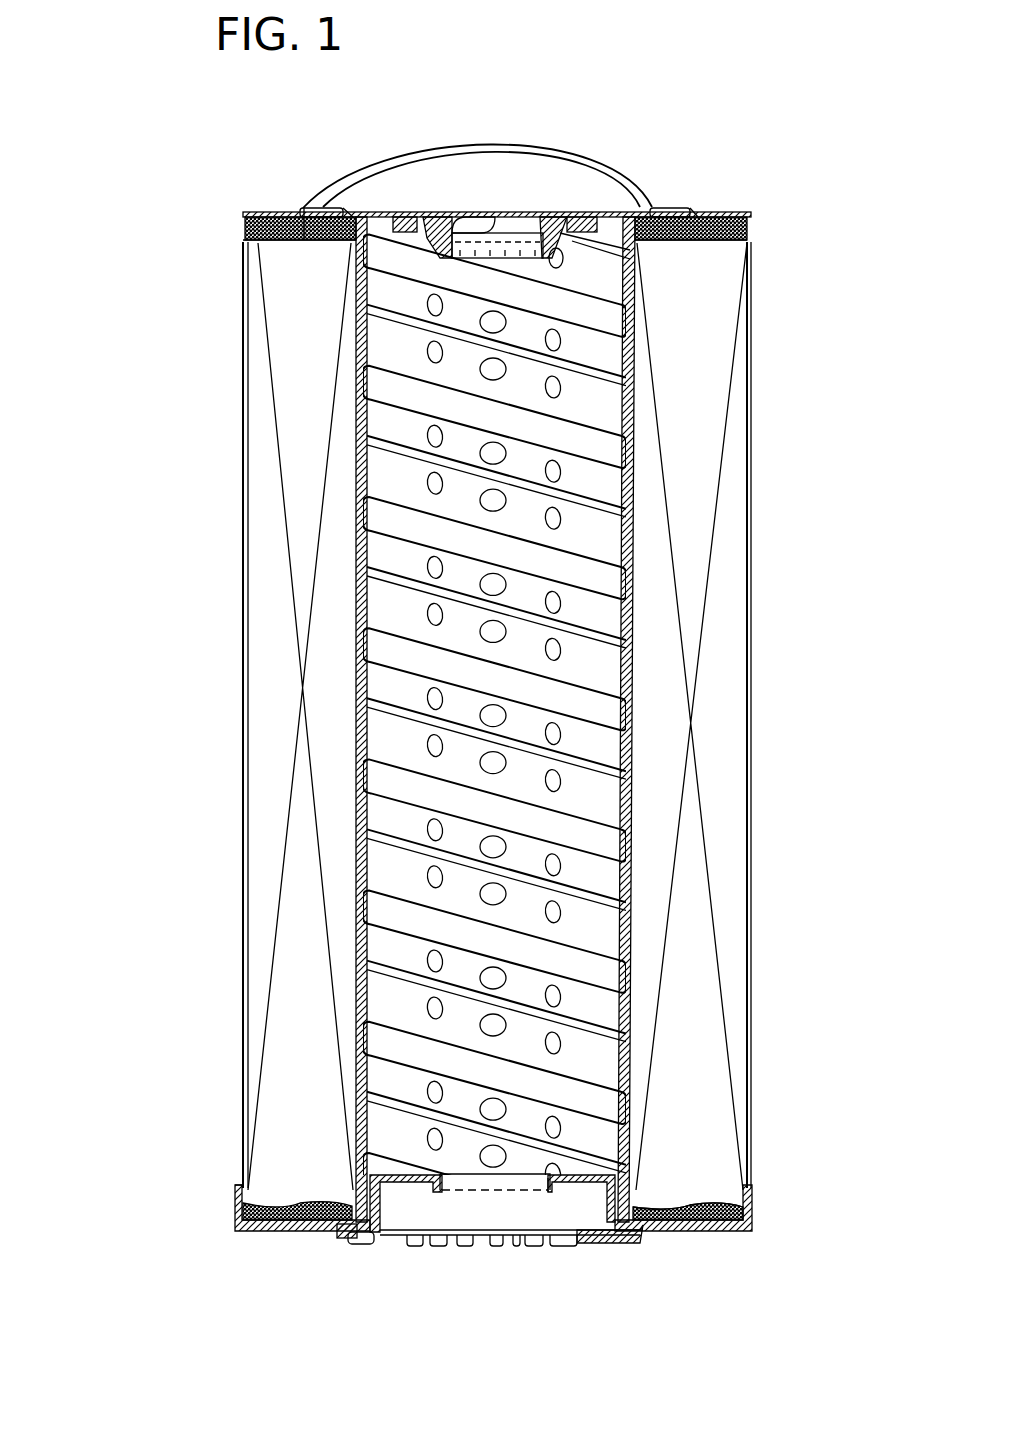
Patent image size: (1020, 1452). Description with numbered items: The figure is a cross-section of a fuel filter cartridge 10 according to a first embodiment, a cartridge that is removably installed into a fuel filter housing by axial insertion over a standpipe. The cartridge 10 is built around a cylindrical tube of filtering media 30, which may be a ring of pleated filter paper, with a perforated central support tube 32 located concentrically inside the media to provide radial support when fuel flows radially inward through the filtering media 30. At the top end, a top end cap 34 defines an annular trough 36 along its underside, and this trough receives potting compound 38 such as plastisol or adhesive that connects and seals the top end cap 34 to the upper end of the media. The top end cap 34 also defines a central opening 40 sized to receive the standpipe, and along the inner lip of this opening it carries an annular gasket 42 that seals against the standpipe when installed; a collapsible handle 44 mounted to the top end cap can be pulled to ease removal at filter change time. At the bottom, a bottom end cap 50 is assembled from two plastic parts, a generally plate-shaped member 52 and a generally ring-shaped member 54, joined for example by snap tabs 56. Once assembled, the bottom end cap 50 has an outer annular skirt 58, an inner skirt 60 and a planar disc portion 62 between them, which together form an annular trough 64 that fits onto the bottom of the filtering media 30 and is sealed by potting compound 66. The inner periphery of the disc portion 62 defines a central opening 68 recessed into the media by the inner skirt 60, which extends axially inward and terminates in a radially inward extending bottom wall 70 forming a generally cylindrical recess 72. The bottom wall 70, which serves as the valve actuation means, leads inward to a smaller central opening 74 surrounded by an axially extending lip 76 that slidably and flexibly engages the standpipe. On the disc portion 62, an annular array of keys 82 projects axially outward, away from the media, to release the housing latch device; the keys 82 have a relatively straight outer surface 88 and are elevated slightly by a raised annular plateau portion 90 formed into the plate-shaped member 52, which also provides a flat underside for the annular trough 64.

The fuel filter cartridge 10 is at (122, 180).
The filtering media 30 is at (288, 762).
The central support tube 32 is at (352, 683).
The top end cap 34 is at (270, 232).
The annular trough 36 is at (304, 238).
The potting compound 38 is at (272, 243).
The central opening 40 is at (424, 216).
The annular gasket 42 is at (496, 232).
The collapsible handle 44 is at (554, 150).
The bottom end cap 50 is at (705, 1231).
The plate-shaped member 52 is at (240, 1233).
The ring-shaped member 54 is at (357, 1168).
The snap tabs 56 is at (367, 1245).
The outer annular skirt 58 is at (242, 1207).
The inner skirt 60 is at (437, 1247).
The disc portion 62 is at (300, 1231).
The annular trough 64 is at (716, 1200).
The potting compound 66 is at (692, 1203).
The central opening 68 is at (405, 1247).
The bottom wall 70 is at (585, 1181).
The cylindrical recess 72 is at (578, 1166).
The central opening 74 is at (527, 1180).
The lip 76 is at (465, 1247).
The keys 82 is at (595, 1247).
The outer surface 88 is at (605, 1247).
The raised annular plateau portion 90 is at (324, 1233).